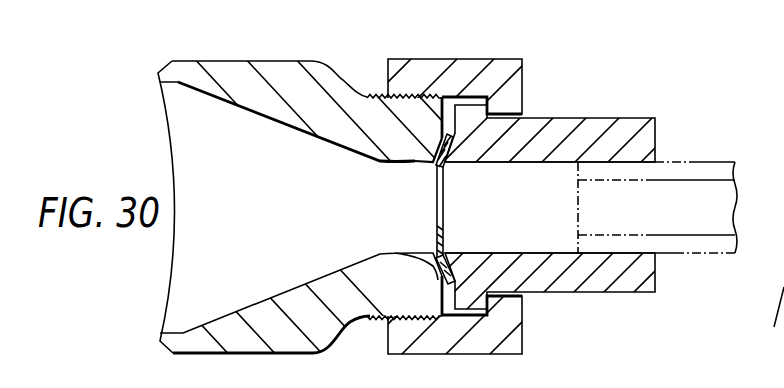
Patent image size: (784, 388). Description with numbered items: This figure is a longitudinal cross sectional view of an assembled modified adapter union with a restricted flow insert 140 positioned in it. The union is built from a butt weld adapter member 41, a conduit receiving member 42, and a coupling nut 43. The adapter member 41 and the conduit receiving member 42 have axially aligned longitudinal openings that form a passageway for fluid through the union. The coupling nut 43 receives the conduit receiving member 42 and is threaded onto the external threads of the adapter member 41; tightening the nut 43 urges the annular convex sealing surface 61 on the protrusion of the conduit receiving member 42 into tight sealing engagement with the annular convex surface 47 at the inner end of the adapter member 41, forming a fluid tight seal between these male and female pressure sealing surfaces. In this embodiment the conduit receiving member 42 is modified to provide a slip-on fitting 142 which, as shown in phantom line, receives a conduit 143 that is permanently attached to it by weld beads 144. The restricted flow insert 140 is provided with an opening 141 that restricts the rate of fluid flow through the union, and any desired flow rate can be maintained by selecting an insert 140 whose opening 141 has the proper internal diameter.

The butt weld adapter member 41 is at (289, 60).
The coupling nut 43 is at (444, 59).
The conduit receiving member 42 is at (582, 118).
The annular convex surface 47 is at (428, 163).
The annular convex sealing surface 61 is at (430, 268).
The restricted flow insert 140 is at (447, 172).
The opening 141 is at (442, 226).
The slip-on fitting 142 is at (650, 252).
The conduit 143 is at (724, 158).
The weld beads 144 is at (666, 158).